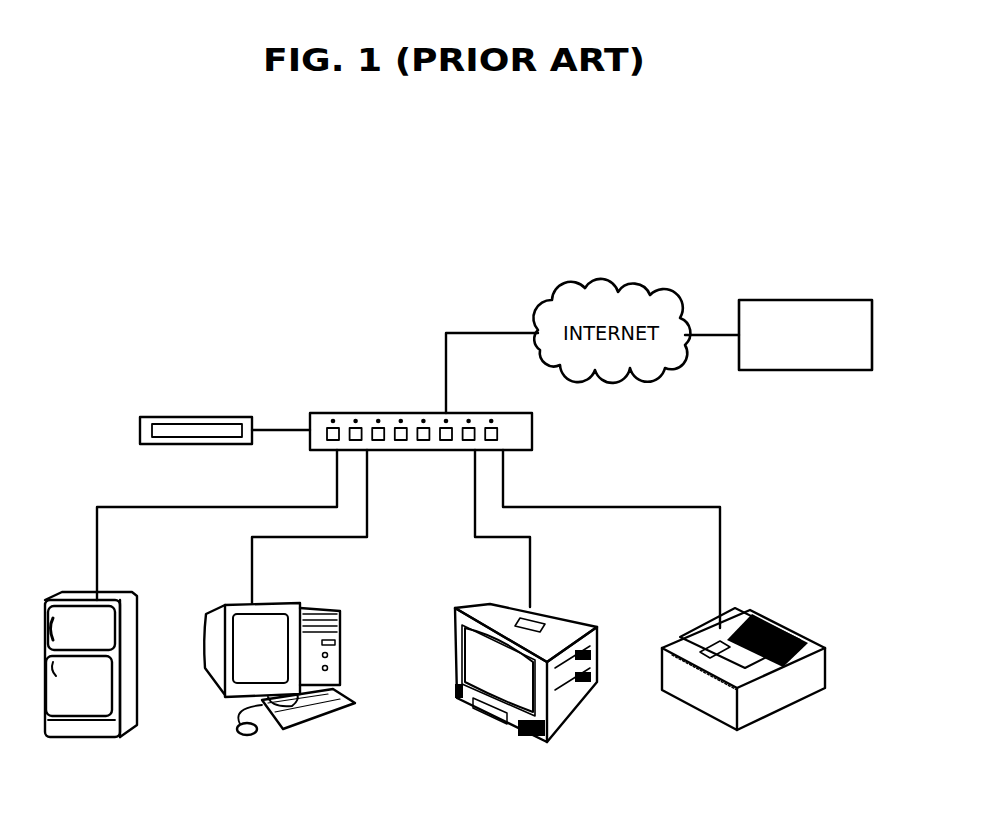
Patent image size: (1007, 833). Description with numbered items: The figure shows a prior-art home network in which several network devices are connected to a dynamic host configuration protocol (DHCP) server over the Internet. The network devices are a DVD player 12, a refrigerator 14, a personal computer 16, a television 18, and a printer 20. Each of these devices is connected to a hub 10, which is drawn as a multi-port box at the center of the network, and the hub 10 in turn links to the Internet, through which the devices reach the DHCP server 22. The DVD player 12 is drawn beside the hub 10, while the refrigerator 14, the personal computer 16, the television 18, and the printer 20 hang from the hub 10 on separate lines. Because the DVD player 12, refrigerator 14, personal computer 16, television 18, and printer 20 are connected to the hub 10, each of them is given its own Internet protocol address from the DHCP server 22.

The hub 10 is at (348, 412).
The DVD player 12 is at (197, 417).
The refrigerator 14 is at (117, 595).
The personal computer 16 is at (277, 608).
The television 18 is at (562, 620).
The printer 20 is at (805, 645).
The dynamic host configuration protocol (DHCP) server 22 is at (806, 300).